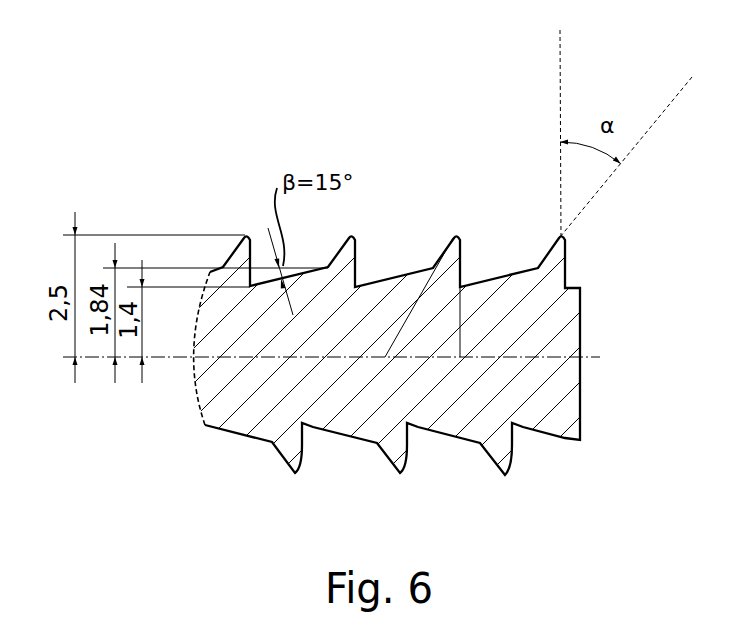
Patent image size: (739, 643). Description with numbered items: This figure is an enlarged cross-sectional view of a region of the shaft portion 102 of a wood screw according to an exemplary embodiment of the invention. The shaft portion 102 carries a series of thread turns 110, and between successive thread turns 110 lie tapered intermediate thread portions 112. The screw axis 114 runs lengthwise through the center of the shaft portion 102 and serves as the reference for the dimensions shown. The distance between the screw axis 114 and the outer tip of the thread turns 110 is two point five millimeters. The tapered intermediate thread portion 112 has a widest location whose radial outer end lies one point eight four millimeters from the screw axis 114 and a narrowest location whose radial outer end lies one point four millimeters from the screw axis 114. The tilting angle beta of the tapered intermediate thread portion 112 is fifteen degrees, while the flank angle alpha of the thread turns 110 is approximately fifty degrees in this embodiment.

The shaft portion 102 is at (580, 388).
The thread turns 110 is at (349, 237).
The tapered intermediate thread portion 112 is at (393, 278).
The screw axis 114 is at (590, 357).